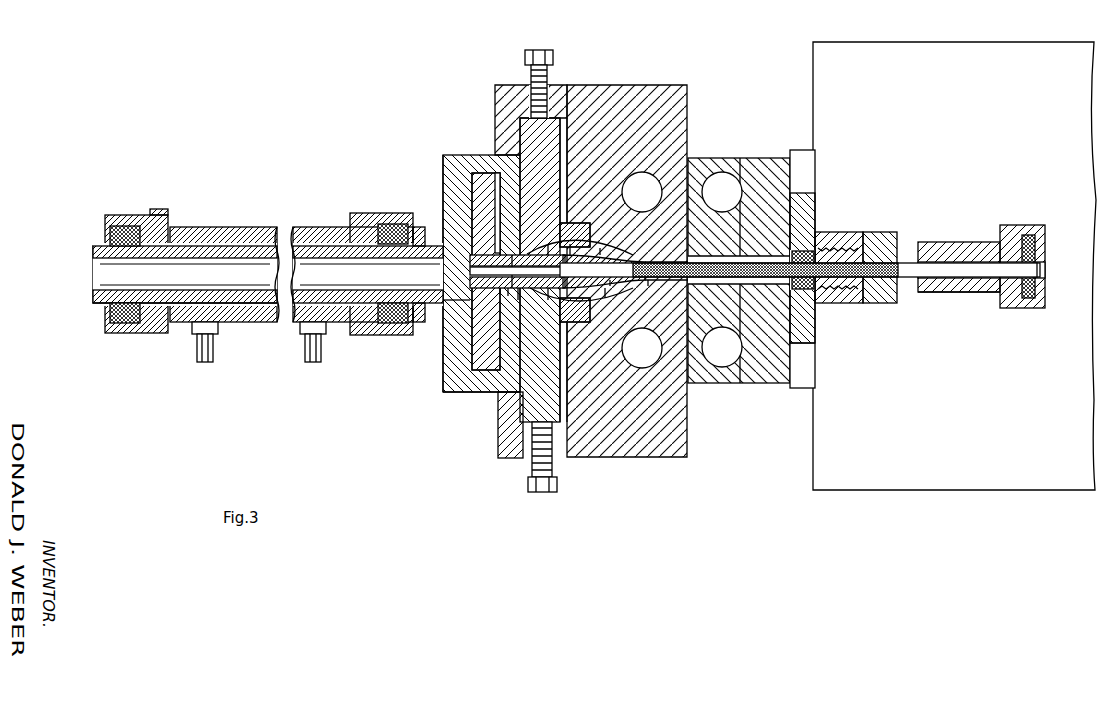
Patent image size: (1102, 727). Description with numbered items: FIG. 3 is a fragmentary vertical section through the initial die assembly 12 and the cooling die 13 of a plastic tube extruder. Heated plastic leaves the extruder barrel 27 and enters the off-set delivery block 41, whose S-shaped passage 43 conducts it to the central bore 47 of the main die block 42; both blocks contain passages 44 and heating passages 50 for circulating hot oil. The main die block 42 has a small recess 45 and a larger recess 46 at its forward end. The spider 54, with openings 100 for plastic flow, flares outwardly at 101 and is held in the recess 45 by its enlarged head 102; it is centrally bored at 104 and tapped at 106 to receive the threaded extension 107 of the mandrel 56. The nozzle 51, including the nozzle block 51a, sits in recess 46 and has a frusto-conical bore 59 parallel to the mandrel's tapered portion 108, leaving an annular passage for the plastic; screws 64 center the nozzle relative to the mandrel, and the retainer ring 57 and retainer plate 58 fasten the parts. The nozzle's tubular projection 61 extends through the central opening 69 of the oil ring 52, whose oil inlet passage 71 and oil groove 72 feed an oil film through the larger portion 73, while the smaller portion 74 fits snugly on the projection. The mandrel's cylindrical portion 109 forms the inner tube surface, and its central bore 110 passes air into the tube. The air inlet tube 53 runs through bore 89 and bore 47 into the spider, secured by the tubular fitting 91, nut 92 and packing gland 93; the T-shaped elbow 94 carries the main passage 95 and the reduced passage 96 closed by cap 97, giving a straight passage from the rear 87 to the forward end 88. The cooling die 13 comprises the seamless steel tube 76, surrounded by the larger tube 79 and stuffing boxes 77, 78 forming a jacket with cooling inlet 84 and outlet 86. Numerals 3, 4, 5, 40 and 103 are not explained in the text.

The seal 3 is at (575, 322).
The seal ring 4 is at (512, 255).
The seal ring 5 is at (570, 244).
The initial die assembly 12 is at (597, 458).
The cooling die 13 is at (284, 232).
The barrel 27 is at (926, 52).
The nozzle passage 40 is at (648, 262).
The delivery block 41 is at (778, 383).
The main die block 42 is at (685, 95).
The S-shaped passage 43 is at (740, 240).
The passages 44 is at (722, 178).
The recess 45 is at (600, 210).
The recess 46 is at (540, 140).
The central bore 47 is at (672, 262).
The heating passages 50 is at (655, 182).
The nozzle 51 is at (530, 415).
The nozzle block 51a is at (522, 90).
The oil ring 52 is at (490, 160).
The air inlet tube 53 is at (905, 300).
The spider 54 is at (612, 286).
The mandrel 56 is at (555, 254).
The retainer ring 57 is at (505, 450).
The retainer plate 58 is at (450, 392).
The frusto conical bore 59 is at (555, 298).
The tubular projection 61 is at (446, 215).
The screws 64 is at (548, 50).
The central opening 69 is at (500, 292).
The oil inlet passage 71 is at (482, 178).
The oil groove 72 is at (470, 330).
The portion 73 is at (445, 247).
The portion 74 is at (508, 298).
The seamless steel tube 76 is at (262, 306).
The stuffing box 77 is at (152, 216).
The stuffing box 78 is at (356, 213).
The larger tube 79 is at (226, 227).
The cooling inlet 84 is at (200, 363).
The cooling outlet 86 is at (313, 363).
The rear of the apparatus 87 is at (1045, 240).
The forward end of the cooling die 88 is at (100, 242).
The bore 89 is at (810, 315).
The tubular fitting 91 is at (815, 212).
The nut 92 is at (895, 238).
The packing gland 93 is at (812, 255).
The T-shaped elbow 94 is at (985, 244).
The main passage 95 is at (962, 262).
The supplementary reduced passage 96 is at (1005, 292).
The cap 97 is at (1040, 272).
The openings 100 is at (583, 225).
The flare 101 is at (605, 255).
The enlarged head 102 is at (590, 322).
The passage 103 is at (650, 286).
The central bore 104 is at (606, 300).
The tapped bore 106 is at (558, 302).
The threaded extension 107 is at (555, 244).
The tapered portion 108 is at (518, 302).
The cylindrical portion 109 is at (452, 300).
The central bore 110 is at (470, 268).